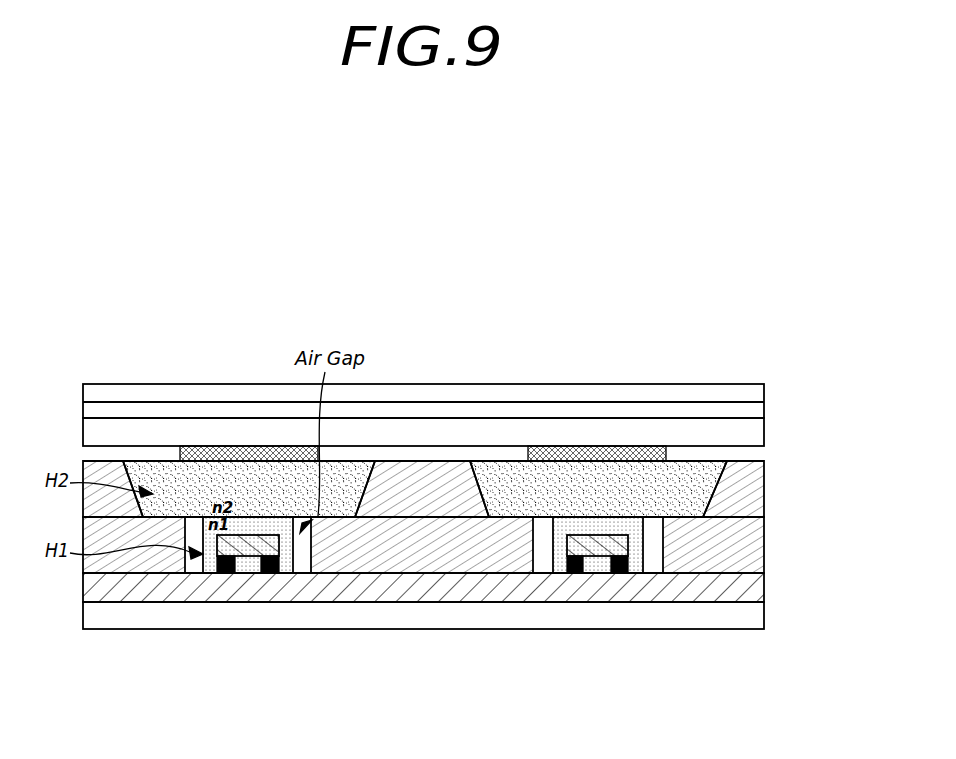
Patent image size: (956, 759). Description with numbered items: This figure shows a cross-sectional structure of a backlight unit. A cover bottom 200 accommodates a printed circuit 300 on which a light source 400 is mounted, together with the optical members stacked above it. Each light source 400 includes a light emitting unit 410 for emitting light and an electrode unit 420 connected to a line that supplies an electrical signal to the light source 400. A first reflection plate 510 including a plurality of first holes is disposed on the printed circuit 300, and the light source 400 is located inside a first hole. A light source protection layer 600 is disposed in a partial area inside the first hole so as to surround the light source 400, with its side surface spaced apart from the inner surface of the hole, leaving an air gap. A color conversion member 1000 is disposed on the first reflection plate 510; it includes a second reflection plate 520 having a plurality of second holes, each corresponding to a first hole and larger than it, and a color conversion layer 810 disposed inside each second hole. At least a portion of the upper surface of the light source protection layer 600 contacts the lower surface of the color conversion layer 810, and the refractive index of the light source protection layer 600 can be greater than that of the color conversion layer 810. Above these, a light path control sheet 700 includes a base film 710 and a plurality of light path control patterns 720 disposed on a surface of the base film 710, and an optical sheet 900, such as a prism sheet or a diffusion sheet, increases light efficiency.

The cover bottom 200 is at (753, 613).
The printed circuit 300 is at (755, 585).
The light source 400 is at (422, 626).
The light emitting unit 410 is at (566, 549).
The electrode unit 420 is at (620, 565).
The first reflection plate 510 is at (753, 547).
The second reflection plate 520 is at (736, 470).
The light source protection layer 600 is at (212, 565).
The light path control sheet 700 is at (423, 378).
The base film 710 is at (585, 430).
The light path control patterns 720 is at (560, 452).
The color conversion layer 810 is at (680, 466).
The optical sheet 900 is at (768, 385).
The color conversion member 1000 is at (423, 406).